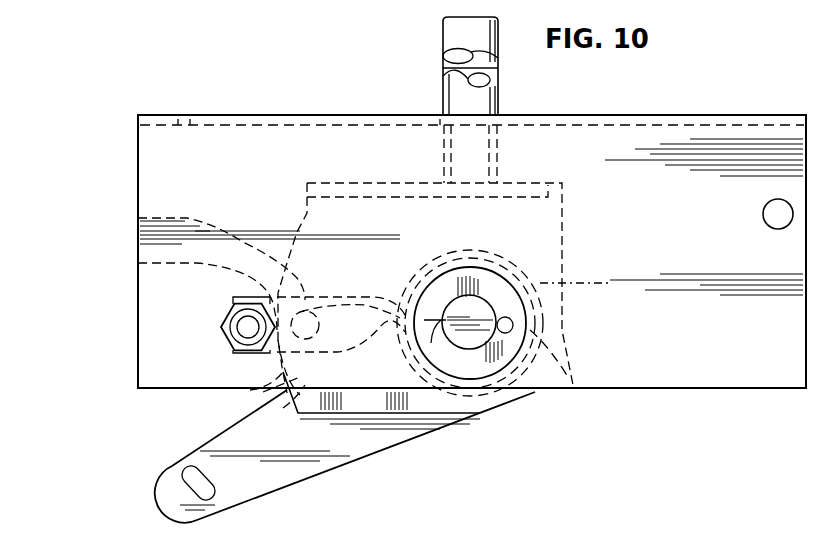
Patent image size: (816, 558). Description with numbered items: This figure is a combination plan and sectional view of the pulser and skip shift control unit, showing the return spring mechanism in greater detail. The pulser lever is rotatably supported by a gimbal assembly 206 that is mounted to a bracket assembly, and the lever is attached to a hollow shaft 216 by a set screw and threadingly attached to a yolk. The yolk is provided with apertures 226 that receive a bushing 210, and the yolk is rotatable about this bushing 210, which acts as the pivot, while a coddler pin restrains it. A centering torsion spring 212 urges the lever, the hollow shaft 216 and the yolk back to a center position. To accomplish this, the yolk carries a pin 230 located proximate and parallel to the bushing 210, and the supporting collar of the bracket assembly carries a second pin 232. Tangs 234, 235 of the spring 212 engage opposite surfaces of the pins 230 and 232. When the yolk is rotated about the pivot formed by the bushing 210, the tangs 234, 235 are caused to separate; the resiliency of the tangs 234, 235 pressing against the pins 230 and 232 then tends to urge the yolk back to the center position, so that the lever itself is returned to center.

The gimbal assembly 206 is at (471, 440).
The bushing 210 is at (504, 370).
The centering torsion spring 212 is at (263, 392).
The hollow shaft 216 is at (467, 102).
The apertures 226 is at (572, 372).
The pin 230 is at (138, 218).
The pin 232 is at (230, 327).
The tang 234 is at (283, 408).
The tang 235 is at (138, 263).